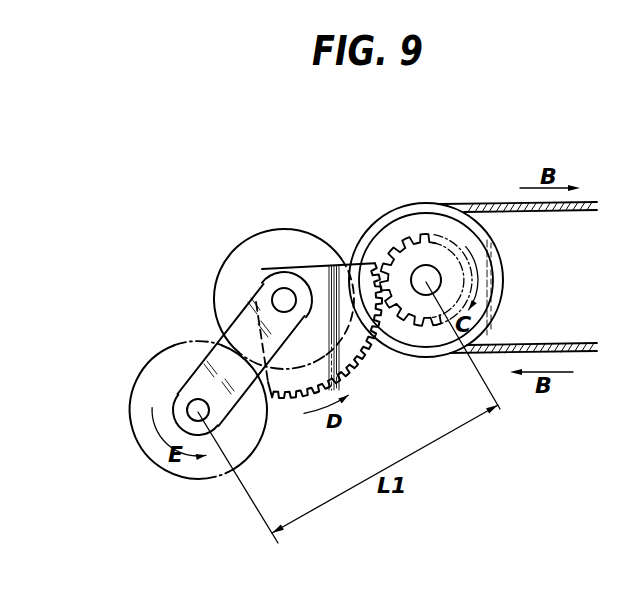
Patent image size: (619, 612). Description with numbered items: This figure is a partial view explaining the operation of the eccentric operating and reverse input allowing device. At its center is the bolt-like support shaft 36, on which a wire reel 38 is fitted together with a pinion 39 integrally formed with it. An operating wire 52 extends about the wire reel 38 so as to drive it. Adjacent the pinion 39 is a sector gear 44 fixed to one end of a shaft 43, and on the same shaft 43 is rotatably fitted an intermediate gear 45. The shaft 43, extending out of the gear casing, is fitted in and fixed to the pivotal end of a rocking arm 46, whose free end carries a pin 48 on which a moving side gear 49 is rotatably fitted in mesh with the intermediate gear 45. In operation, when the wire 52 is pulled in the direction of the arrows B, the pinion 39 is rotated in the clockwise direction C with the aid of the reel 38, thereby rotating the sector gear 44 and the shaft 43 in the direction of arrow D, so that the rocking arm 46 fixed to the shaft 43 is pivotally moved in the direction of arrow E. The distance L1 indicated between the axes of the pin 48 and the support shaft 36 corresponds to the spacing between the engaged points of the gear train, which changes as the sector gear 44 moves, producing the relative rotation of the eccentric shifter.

The support shaft 36 is at (428, 266).
The wire reel 38 is at (399, 208).
The pinion 39 is at (384, 243).
The shaft 43 is at (283, 288).
The sector gear 44 is at (363, 374).
The intermediate gear 45 is at (221, 267).
The rocking arm 46 is at (207, 352).
The pin 48 is at (190, 402).
The moving side gear 49 is at (170, 470).
The operating wire 52 is at (546, 214).